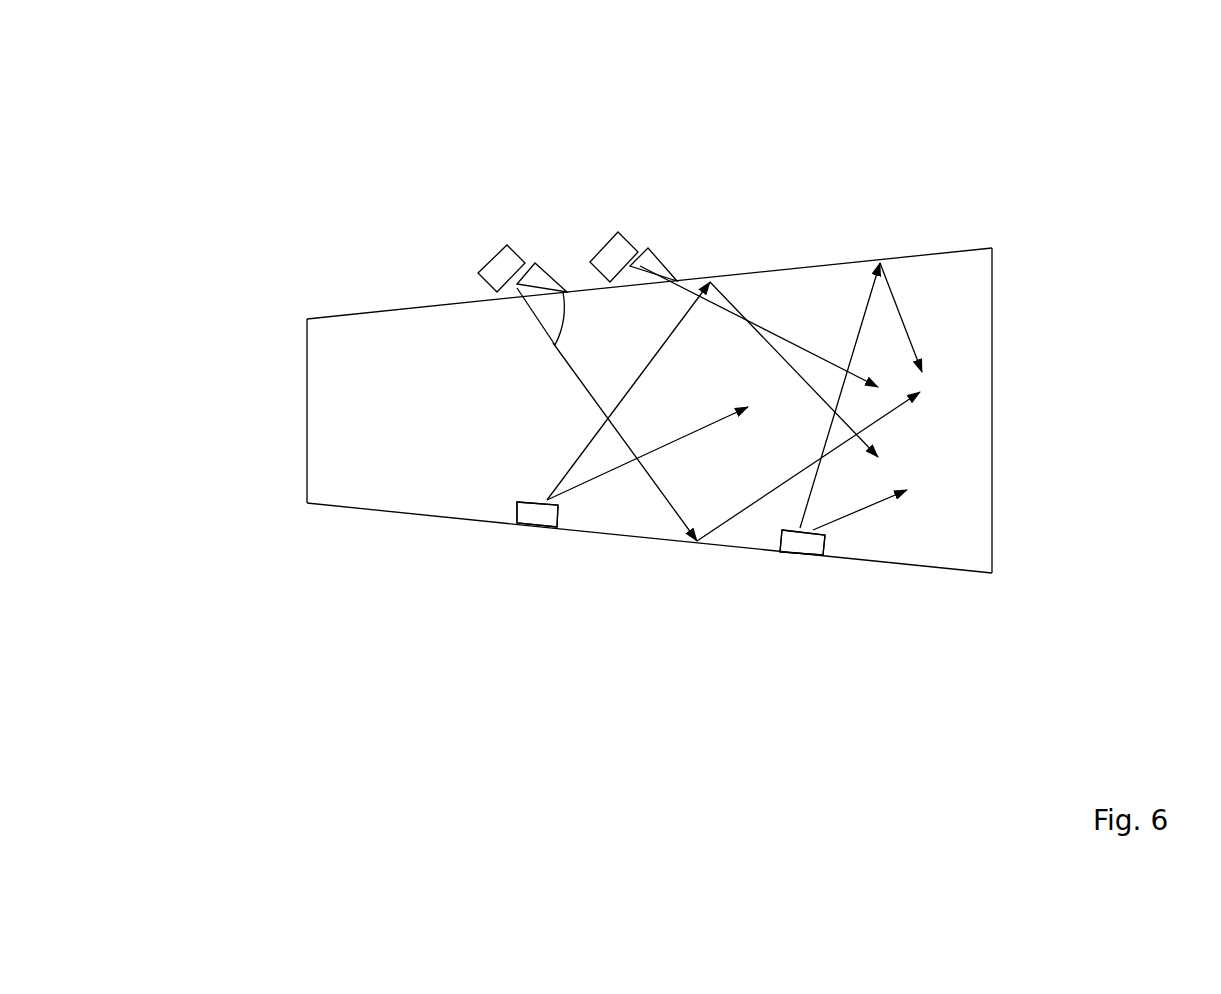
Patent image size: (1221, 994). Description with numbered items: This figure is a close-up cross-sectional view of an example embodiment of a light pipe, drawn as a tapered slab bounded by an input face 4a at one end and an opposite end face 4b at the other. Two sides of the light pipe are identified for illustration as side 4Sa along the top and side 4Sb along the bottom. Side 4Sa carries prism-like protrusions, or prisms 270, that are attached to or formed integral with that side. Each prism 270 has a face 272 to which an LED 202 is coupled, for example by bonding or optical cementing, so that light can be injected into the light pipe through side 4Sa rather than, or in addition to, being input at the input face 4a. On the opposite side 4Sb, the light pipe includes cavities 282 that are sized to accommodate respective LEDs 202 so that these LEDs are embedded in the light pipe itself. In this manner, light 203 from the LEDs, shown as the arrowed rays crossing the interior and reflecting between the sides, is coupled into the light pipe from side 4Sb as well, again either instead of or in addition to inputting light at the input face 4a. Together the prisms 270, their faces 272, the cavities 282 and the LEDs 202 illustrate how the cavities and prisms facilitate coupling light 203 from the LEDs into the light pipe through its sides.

The input face 4a is at (305, 343).
The light pipe end face 4b is at (993, 318).
The light pipe side 4Sa is at (950, 247).
The light pipe side 4Sb is at (937, 558).
The LED 202 is at (602, 248).
The prism 270 is at (655, 253).
The prism face 272 is at (555, 345).
The cavity 282 is at (517, 502).
The light 203 is at (910, 447).